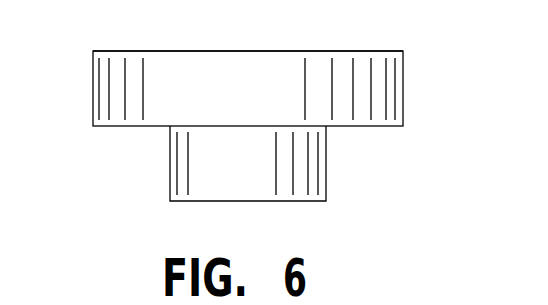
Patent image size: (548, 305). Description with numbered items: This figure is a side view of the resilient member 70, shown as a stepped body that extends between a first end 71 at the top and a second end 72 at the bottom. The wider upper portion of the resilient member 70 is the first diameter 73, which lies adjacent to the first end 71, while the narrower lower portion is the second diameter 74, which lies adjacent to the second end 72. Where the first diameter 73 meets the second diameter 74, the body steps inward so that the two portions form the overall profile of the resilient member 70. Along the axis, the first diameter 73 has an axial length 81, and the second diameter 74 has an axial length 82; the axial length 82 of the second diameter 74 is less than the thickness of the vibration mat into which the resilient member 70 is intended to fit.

The resilient member 70 is at (226, 51).
The first end 71 is at (93, 51).
The second end 72 is at (170, 201).
The first diameter 73 is at (93, 89).
The second diameter 74 is at (177, 170).
The axial length 81 is at (403, 84).
The axial length 82 is at (326, 163).